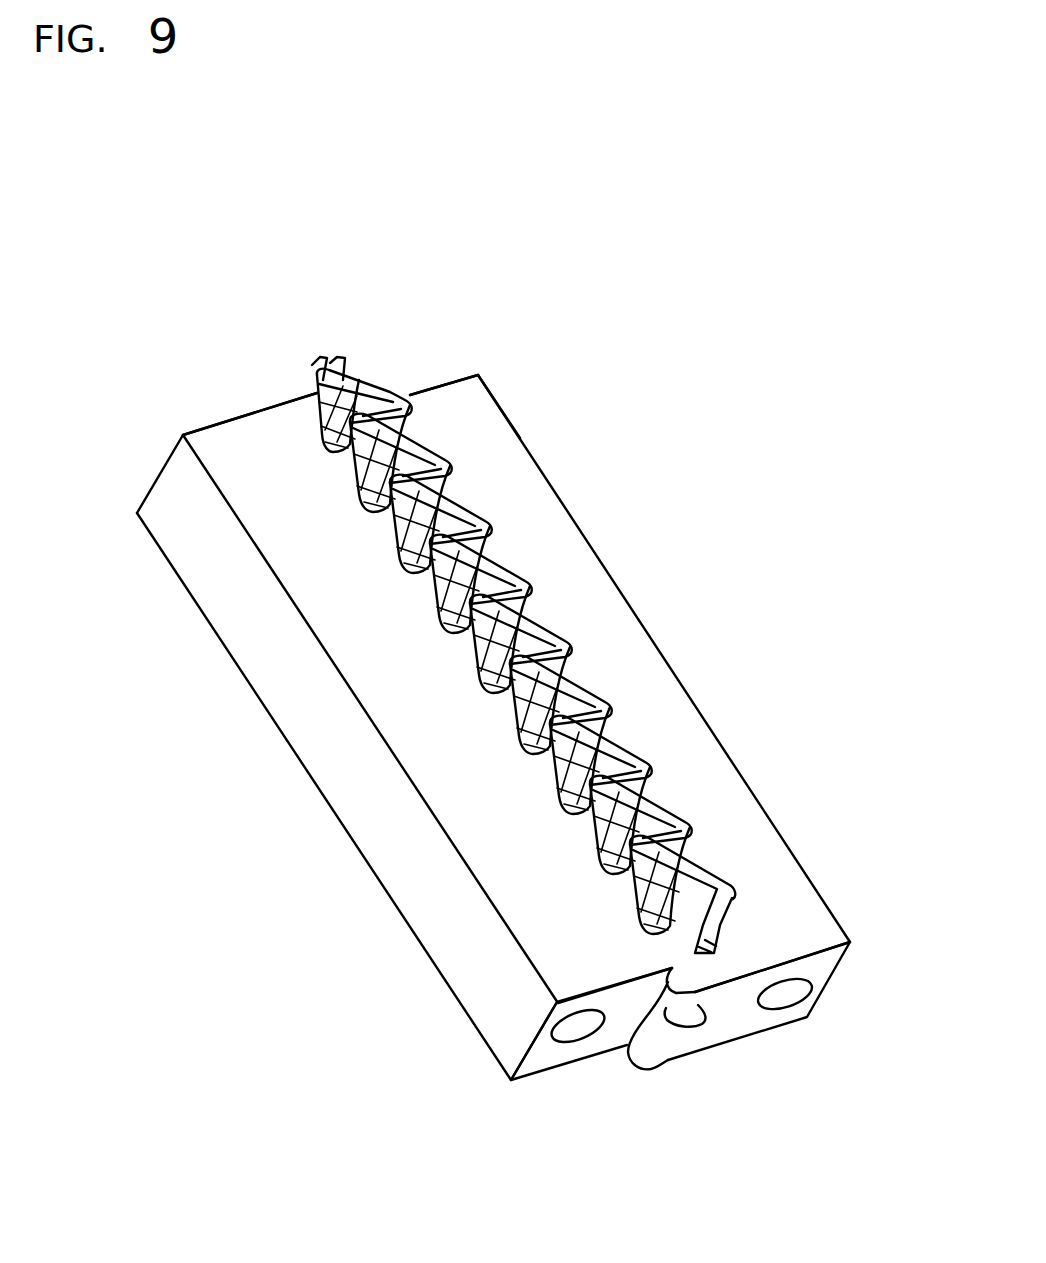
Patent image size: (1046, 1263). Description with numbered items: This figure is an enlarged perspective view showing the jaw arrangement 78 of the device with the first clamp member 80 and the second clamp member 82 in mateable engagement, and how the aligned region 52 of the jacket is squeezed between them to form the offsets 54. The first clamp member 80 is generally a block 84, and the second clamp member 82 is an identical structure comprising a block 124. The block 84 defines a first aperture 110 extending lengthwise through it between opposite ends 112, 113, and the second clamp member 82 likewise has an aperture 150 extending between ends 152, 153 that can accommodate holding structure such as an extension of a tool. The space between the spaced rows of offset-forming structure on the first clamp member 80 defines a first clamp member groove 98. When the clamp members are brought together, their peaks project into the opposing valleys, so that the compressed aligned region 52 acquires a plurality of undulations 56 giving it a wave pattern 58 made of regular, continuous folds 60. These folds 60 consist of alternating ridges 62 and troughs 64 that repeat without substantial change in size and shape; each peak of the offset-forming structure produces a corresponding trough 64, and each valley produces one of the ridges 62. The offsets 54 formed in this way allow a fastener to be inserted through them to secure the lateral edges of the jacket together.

The aligned region 52 is at (339, 312).
The offsets 54 is at (552, 605).
The undulations 56 is at (438, 673).
The wave pattern 58 is at (566, 648).
The folds 60 is at (413, 402).
The ridges 62 is at (353, 462).
The troughs 64 is at (450, 466).
The jaw arrangement 78 is at (500, 762).
The first clamp member 80 is at (540, 477).
The second clamp member 82 is at (200, 435).
The block 84 is at (802, 868).
The first clamp member groove 98 is at (690, 1032).
The first aperture 110 is at (790, 998).
The end 112 is at (733, 1040).
The end 113 is at (462, 372).
The block 124 is at (425, 940).
The aperture 150 is at (572, 1037).
The end 152 is at (533, 1070).
The end 153 is at (235, 420).